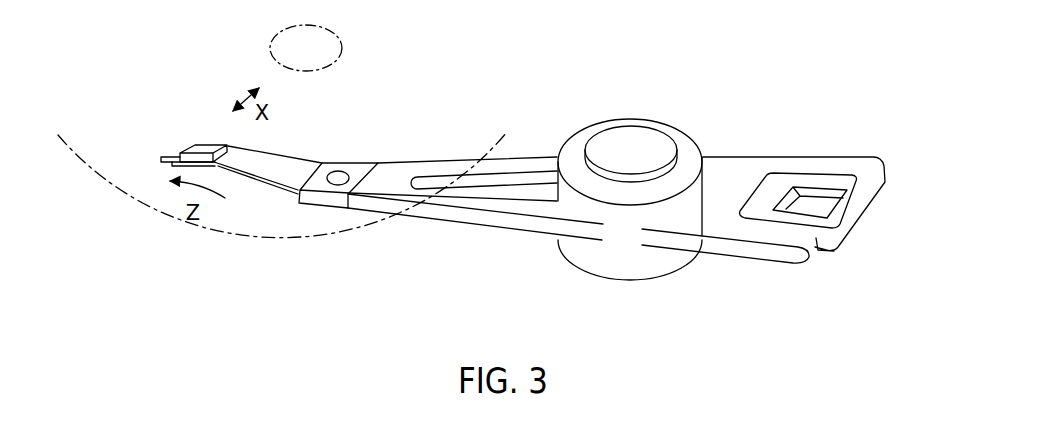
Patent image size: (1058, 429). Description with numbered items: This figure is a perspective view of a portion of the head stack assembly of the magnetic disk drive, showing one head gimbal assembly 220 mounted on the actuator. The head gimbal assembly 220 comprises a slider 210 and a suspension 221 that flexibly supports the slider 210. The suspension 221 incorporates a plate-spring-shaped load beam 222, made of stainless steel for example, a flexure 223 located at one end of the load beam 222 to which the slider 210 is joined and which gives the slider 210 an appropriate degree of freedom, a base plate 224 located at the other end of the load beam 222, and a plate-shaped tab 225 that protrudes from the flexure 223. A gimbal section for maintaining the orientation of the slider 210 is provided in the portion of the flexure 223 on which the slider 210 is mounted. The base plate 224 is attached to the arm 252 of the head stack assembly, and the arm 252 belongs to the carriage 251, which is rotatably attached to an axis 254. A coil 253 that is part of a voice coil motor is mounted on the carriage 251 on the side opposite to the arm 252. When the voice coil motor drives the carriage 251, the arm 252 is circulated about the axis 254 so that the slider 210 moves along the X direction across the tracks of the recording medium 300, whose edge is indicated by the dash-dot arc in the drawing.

The slider 210 is at (203, 150).
The head gimbal assembly 220 is at (287, 207).
The suspension 221 is at (285, 153).
The load beam 222 is at (303, 167).
The flexure 223 is at (178, 157).
The base plate 224 is at (367, 162).
The tab 225 is at (165, 158).
The carriage 251 is at (580, 140).
The arm 252 is at (441, 213).
The coil 253 is at (867, 226).
The axis 254 is at (643, 140).
The recording medium 300 is at (213, 232).